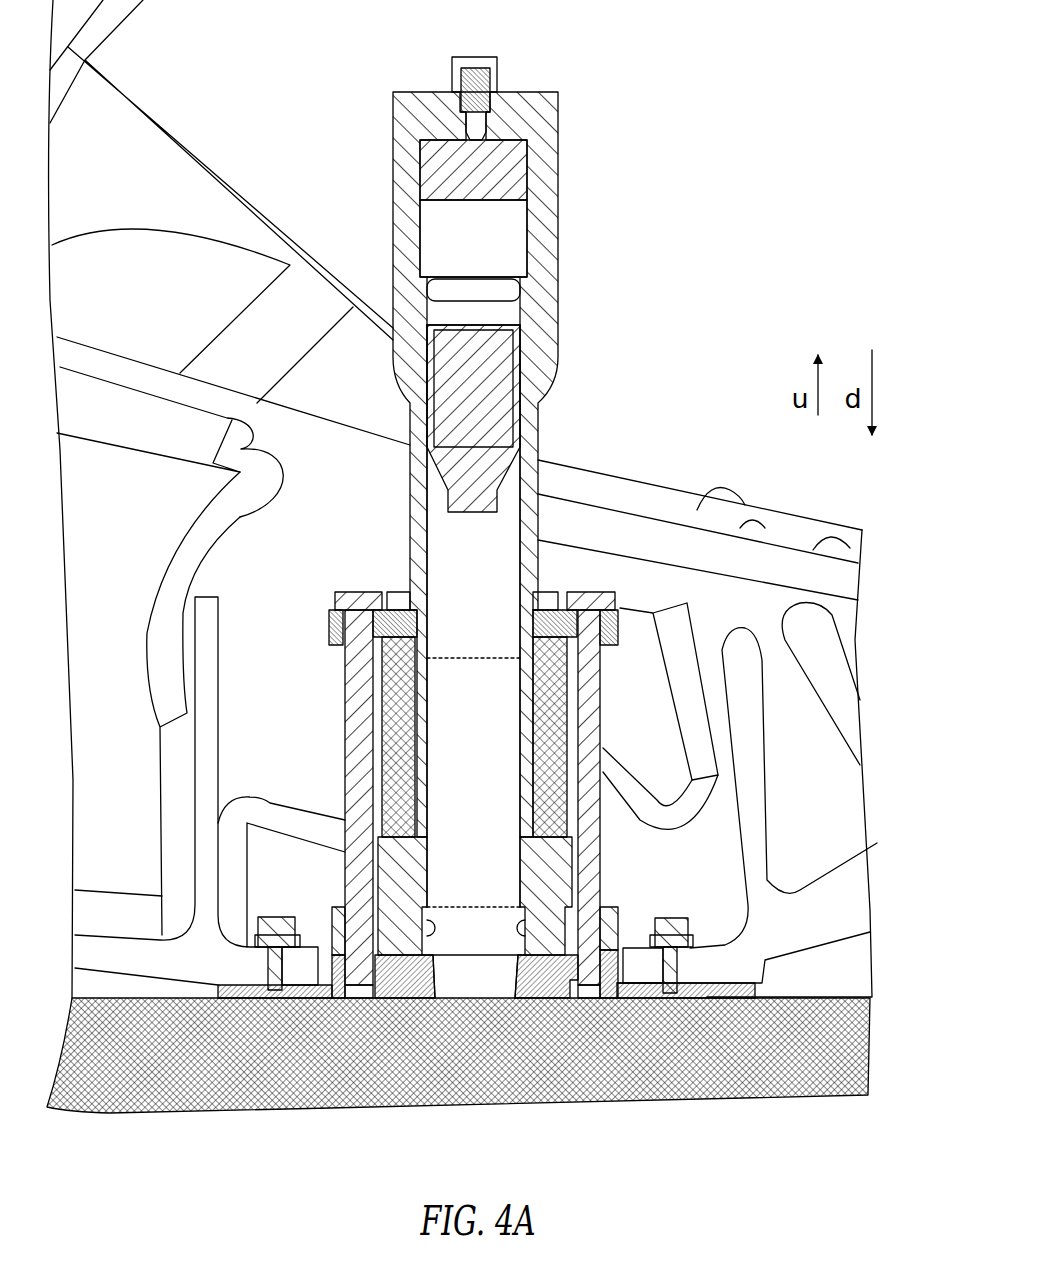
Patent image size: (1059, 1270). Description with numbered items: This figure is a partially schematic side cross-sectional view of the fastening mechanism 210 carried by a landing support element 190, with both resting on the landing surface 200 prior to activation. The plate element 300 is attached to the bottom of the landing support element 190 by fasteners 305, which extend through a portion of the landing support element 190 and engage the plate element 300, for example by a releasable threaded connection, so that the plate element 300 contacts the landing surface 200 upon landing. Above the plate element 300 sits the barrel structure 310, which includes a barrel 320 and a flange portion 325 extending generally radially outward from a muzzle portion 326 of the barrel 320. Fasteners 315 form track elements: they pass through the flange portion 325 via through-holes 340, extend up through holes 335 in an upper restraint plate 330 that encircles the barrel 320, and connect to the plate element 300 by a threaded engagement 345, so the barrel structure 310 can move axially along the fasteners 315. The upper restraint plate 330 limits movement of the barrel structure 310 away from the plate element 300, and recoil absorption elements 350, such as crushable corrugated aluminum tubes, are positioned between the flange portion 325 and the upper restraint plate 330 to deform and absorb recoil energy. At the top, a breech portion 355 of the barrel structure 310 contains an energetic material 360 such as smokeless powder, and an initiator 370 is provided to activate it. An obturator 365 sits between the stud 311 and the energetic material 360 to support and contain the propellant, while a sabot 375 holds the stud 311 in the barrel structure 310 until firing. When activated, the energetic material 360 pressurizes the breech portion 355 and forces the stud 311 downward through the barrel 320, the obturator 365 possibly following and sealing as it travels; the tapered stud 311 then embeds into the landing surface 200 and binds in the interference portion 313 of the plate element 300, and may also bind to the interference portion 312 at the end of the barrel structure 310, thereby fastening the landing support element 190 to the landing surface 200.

The landing support element 190 is at (683, 503).
The landing surface 200 is at (775, 1085).
The fastening mechanism 210 is at (590, 82).
The plate element 300 is at (410, 982).
The fasteners 305 is at (272, 922).
The barrel structure 310 is at (610, 422).
The stud 311 is at (512, 385).
The interference portion 312 is at (485, 930).
The interference portion 313 is at (510, 983).
The fasteners 315 is at (360, 597).
The barrel 320 is at (497, 560).
The flange portion 325 is at (403, 868).
The muzzle portion 326 is at (545, 936).
The upper restraint plate 330 is at (393, 620).
The holes 335 is at (347, 640).
The through-holes 340 is at (342, 903).
The threaded engagement 345 is at (380, 977).
The recoil absorption elements 350 is at (550, 703).
The breech portion 355 is at (517, 243).
The energetic material 360 is at (517, 167).
The obturator 365 is at (520, 297).
The initiator 370 is at (468, 90).
The sabot 375 is at (497, 417).